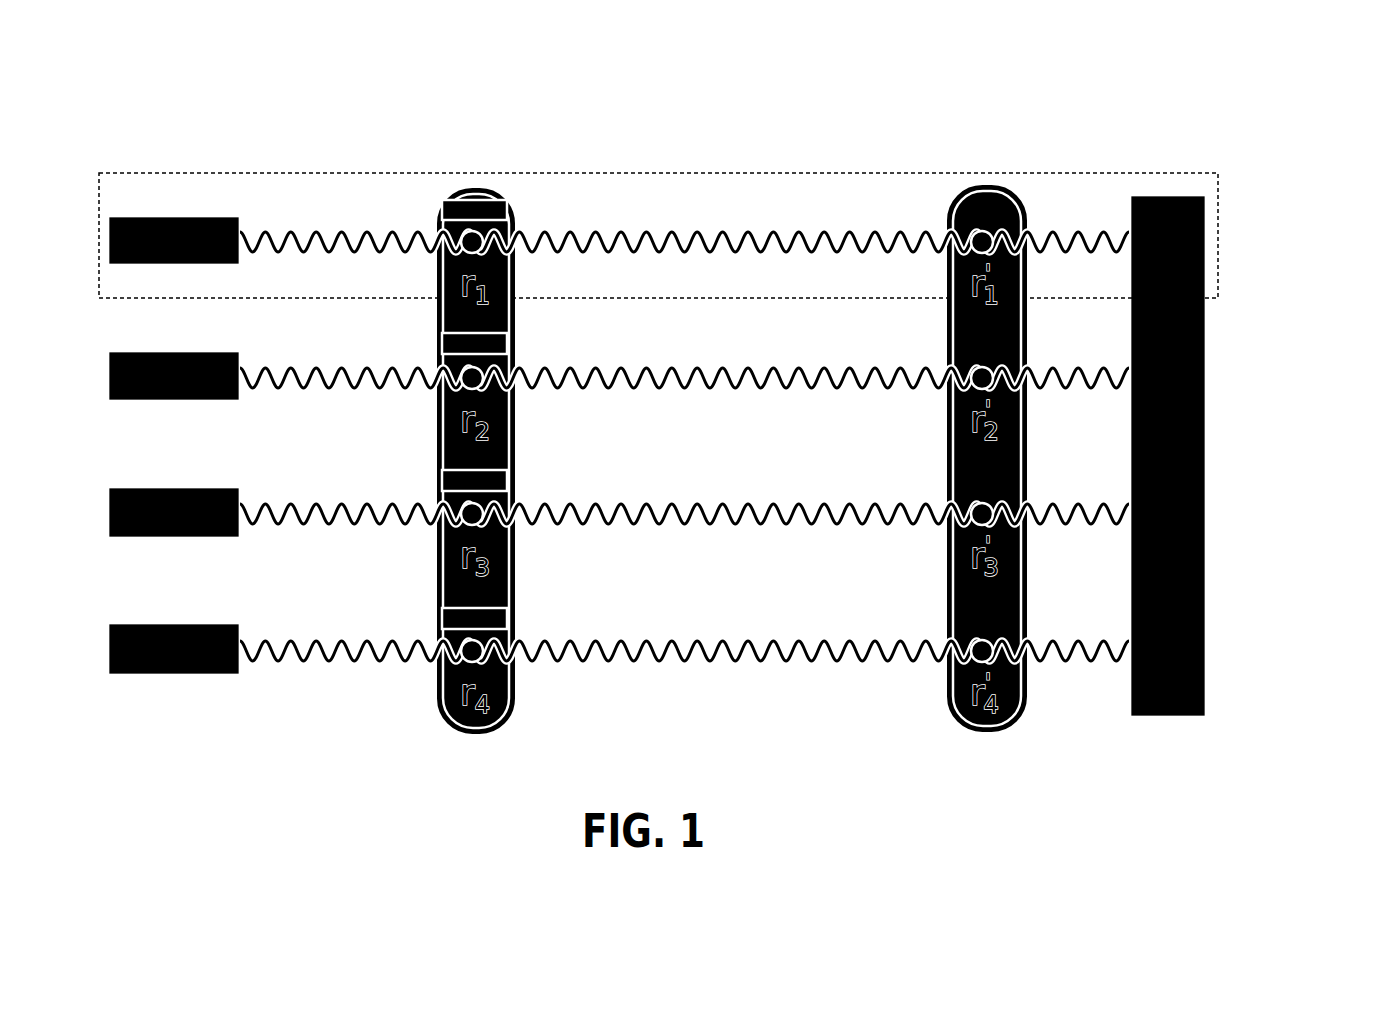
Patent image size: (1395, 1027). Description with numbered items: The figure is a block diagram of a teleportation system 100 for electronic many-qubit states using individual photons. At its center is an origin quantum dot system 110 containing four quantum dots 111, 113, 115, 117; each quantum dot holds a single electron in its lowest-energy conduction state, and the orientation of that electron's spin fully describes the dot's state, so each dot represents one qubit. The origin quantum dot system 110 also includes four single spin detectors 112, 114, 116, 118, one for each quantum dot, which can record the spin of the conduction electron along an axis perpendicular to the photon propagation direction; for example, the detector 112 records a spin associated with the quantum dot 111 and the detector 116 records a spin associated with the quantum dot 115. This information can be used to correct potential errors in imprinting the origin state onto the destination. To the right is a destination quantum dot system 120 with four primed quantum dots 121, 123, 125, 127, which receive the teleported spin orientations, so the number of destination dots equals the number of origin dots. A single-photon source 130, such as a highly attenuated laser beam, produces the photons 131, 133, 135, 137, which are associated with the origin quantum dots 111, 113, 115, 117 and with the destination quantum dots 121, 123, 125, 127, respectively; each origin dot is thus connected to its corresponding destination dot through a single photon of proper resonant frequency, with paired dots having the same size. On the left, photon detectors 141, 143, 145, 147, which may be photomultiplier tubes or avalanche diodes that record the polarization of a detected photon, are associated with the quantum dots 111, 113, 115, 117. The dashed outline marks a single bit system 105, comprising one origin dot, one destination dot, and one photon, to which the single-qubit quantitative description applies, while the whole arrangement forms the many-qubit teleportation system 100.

The teleportation system 100 is at (1322, 83).
The single bit system 105 is at (874, 173).
The origin quantum dot system 110 is at (497, 728).
The quantum dot 111 is at (468, 250).
The single spin detector 112 is at (503, 213).
The quantum dot 113 is at (468, 386).
The single spin detector 114 is at (505, 349).
The quantum dot 115 is at (468, 522).
The single spin detector 116 is at (505, 486).
The quantum dot 117 is at (468, 659).
The single spin detector 118 is at (505, 622).
The destination quantum dot system 120 is at (1006, 728).
The quantum dot 121 is at (978, 250).
The quantum dot 123 is at (978, 386).
The quantum dot 125 is at (978, 522).
The quantum dot 127 is at (978, 659).
The single-photon source 130 is at (1176, 715).
The photon 131 is at (778, 240).
The photon 133 is at (778, 376).
The photon 135 is at (778, 512).
The photon 137 is at (828, 649).
The photon detector 141 is at (110, 240).
The photon detector 143 is at (110, 376).
The photon detector 145 is at (110, 512).
The photon detector 147 is at (110, 649).